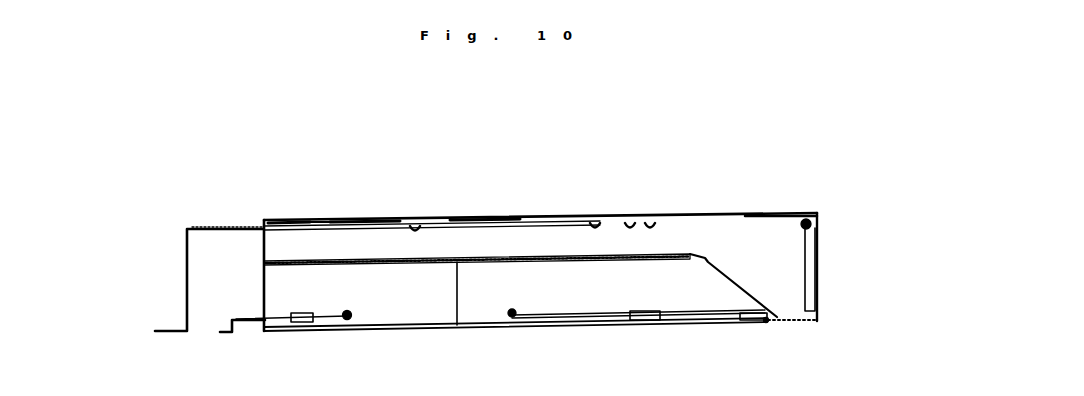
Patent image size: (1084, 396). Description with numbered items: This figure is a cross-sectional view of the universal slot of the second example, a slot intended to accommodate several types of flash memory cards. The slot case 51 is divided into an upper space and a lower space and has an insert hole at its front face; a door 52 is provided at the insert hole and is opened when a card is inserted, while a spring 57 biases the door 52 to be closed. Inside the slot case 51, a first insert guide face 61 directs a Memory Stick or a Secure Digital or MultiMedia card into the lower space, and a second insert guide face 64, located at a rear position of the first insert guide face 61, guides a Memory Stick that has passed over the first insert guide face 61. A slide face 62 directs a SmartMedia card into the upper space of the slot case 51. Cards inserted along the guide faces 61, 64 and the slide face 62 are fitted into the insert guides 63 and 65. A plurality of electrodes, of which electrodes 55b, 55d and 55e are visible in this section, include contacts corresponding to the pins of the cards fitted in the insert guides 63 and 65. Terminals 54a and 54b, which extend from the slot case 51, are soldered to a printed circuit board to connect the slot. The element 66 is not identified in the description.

The slot case 51 is at (470, 218).
The door 52 is at (808, 266).
The terminal 54a is at (212, 228).
The terminal 54b is at (248, 324).
The electrode 55b is at (290, 222).
The electrode 55d is at (333, 323).
The electrode 55e is at (625, 320).
The spring 57 is at (815, 226).
The first insert guide face 61 is at (742, 316).
The slide face 62 is at (718, 262).
The insert guide 63 is at (540, 302).
The second insert guide face 64 is at (457, 297).
The insert guide 65 is at (373, 303).
The strip 66 is at (545, 247).